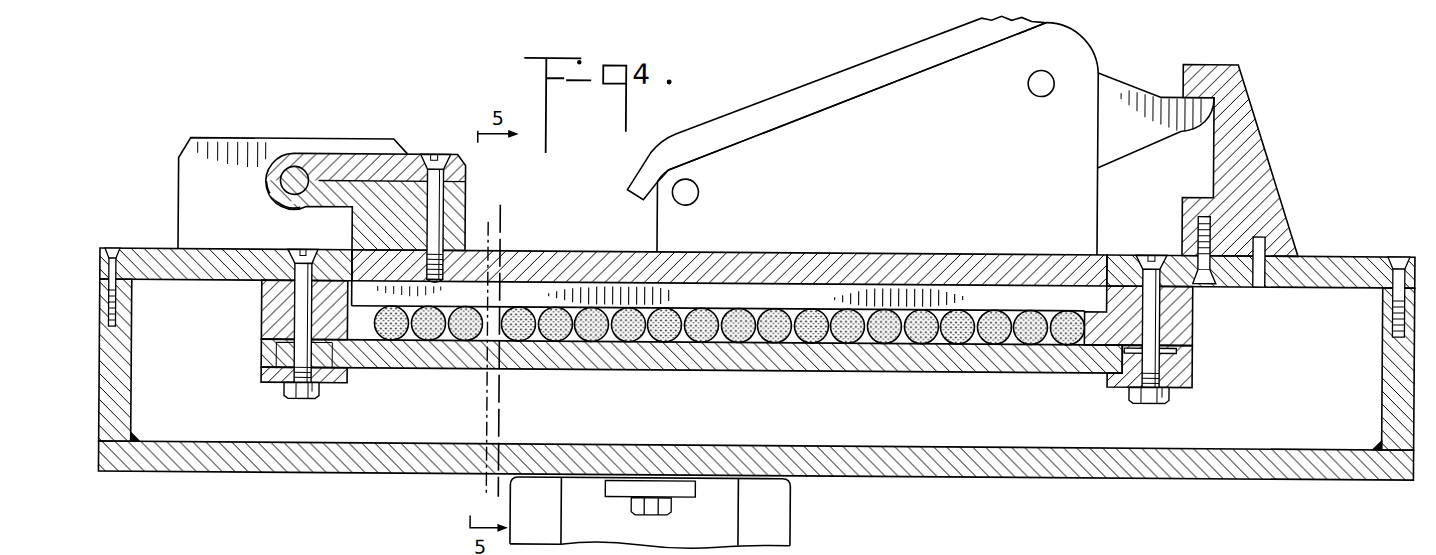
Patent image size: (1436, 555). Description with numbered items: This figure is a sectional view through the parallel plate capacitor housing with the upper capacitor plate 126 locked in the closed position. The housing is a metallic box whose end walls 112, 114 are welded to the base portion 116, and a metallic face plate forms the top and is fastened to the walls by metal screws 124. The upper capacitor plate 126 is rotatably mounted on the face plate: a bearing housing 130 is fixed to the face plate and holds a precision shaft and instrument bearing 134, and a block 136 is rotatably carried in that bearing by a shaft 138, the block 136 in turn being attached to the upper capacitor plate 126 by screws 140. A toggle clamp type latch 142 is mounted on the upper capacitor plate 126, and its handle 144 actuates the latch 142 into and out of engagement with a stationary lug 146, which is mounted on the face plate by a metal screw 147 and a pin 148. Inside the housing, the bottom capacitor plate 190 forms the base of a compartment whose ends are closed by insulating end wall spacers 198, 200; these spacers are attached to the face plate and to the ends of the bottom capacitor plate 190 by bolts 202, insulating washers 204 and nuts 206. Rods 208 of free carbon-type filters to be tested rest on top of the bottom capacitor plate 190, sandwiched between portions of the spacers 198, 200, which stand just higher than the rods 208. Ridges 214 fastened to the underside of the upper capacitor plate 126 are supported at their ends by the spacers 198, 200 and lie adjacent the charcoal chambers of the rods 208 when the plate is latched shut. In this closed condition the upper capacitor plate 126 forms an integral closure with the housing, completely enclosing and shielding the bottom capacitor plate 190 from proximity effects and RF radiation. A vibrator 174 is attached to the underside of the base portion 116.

The end wall 112 is at (128, 385).
The end wall 114 is at (1383, 349).
The base portion 116 is at (1217, 469).
The metal screws 124 is at (1403, 248).
The upper capacitor plate 126 is at (543, 250).
The bearing housing 130 is at (196, 139).
The precision shaft and instrument bearing 134 is at (262, 175).
The block 136 is at (457, 197).
The shaft 138 is at (297, 168).
The screws 140 is at (433, 150).
The toggle clamp type latch 142 is at (1085, 178).
The handle 144 is at (792, 97).
The stationary lug 146 is at (1262, 169).
The metal screw 147 is at (1205, 281).
The pin 148 is at (1262, 281).
The vibrator 174 is at (783, 521).
The bottom capacitor plate 190 is at (843, 364).
The end wall spacer 198 is at (270, 310).
The end wall spacer 200 is at (1193, 330).
The bolts 202 is at (295, 246).
The insulating washers 204 is at (350, 377).
The nuts 206 is at (318, 397).
The rods of free carbon-type filters 208 is at (1027, 340).
The ridges 214 is at (590, 290).